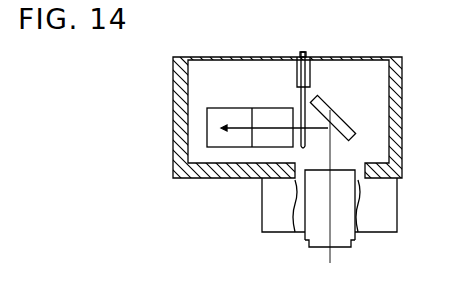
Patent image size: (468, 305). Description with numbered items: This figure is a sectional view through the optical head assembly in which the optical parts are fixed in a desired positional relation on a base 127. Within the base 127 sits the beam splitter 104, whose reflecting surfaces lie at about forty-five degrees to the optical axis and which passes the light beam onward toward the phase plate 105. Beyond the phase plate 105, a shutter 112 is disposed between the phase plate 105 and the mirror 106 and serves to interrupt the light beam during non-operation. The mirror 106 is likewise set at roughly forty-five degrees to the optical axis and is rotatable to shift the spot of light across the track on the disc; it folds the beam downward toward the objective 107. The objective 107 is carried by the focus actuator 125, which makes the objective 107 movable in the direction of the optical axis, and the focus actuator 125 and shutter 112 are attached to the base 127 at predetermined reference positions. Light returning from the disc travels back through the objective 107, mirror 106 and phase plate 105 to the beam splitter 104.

The beam splitter 104 is at (232, 108).
The phase plate 105 is at (296, 107).
The shutter 112 is at (307, 53).
The mirror 106 is at (329, 118).
The base 127 is at (397, 110).
The focus actuator 125 is at (392, 213).
The objective 107 is at (345, 247).